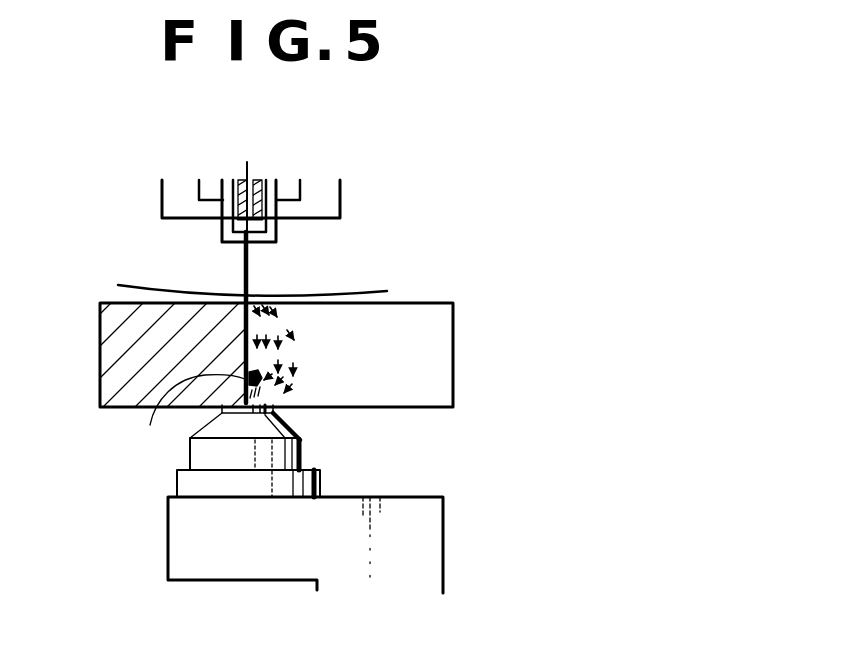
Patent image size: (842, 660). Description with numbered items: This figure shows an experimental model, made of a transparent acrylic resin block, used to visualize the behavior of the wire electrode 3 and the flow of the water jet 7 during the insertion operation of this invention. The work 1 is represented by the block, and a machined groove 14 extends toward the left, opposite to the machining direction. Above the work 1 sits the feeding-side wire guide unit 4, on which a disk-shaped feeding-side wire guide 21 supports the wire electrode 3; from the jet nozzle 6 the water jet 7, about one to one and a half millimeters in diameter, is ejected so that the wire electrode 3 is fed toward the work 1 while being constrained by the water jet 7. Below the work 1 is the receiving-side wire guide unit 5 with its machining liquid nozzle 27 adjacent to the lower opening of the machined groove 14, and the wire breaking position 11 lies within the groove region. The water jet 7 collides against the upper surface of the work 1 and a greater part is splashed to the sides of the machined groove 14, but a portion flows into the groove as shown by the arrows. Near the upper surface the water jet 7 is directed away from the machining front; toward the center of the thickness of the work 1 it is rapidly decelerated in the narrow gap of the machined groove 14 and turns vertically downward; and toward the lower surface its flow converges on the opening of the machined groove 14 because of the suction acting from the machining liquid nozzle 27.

The work 1 is at (453, 318).
The wire electrode 3 is at (253, 179).
The feeding-side wire guide unit 4 is at (340, 192).
The receiving-side wire guide unit 5 is at (168, 537).
The jet nozzle 6 is at (222, 187).
The water jet 7 is at (257, 263).
The wire breaking position 11 is at (179, 415).
The machined groove 14 is at (325, 395).
The feeding-side wire guide 21 is at (225, 222).
The machining liquid nozzle 27 is at (220, 411).